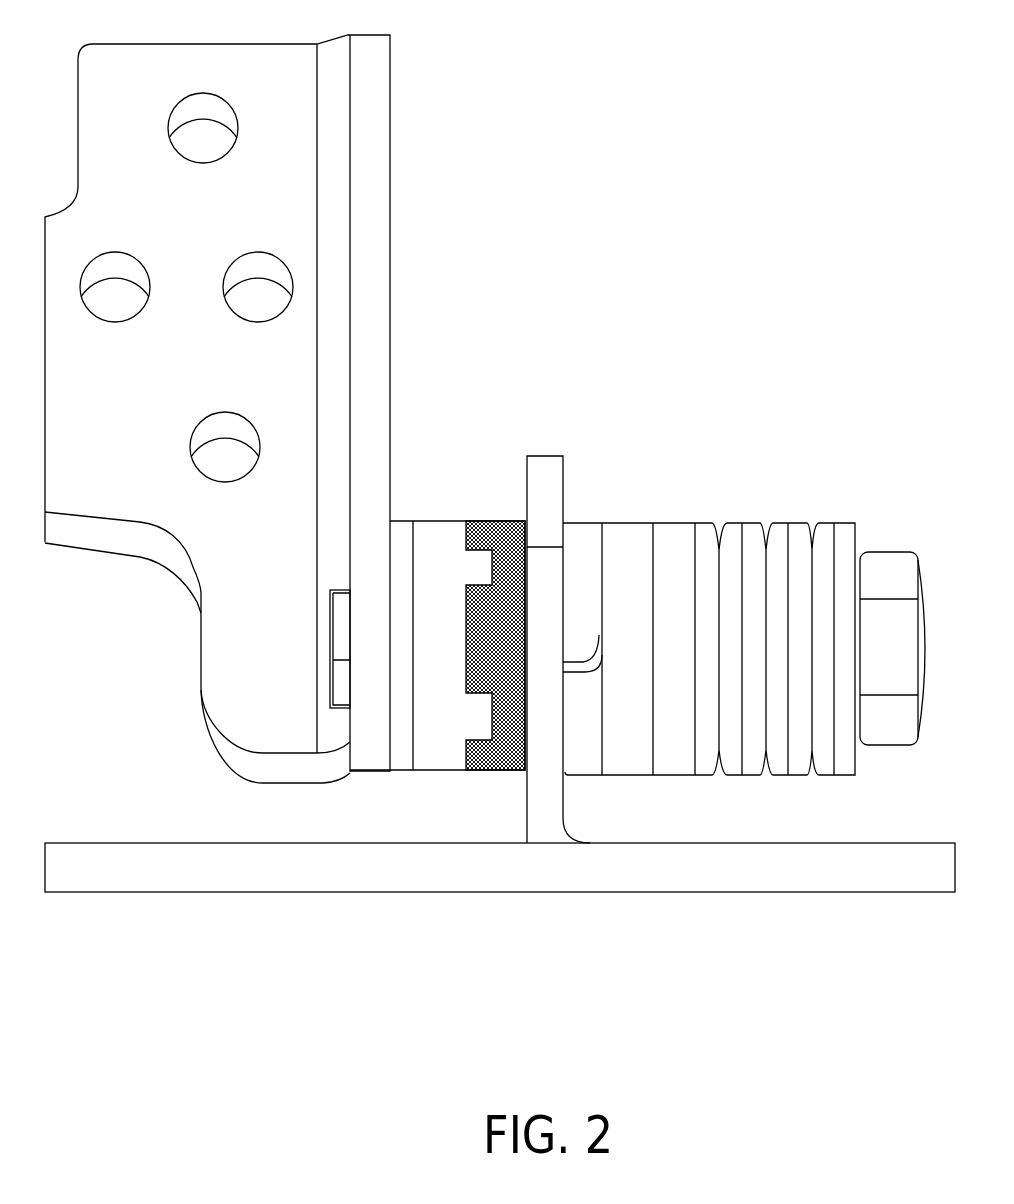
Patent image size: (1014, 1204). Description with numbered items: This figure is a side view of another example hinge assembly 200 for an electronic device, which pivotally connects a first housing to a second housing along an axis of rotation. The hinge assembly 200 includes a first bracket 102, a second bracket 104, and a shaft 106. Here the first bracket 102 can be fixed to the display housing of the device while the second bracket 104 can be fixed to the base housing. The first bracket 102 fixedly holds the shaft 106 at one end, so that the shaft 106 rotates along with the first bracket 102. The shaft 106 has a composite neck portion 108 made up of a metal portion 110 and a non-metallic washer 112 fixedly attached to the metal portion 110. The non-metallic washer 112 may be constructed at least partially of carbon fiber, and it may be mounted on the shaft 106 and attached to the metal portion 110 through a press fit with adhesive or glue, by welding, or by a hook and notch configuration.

The first bracket 102 is at (390, 225).
The second bracket 104 is at (453, 843).
The shaft 106 is at (332, 628).
The composite neck portion 108 is at (437, 642).
The metal portion 110 is at (438, 532).
The non-metallic washer 112 is at (485, 532).
The hinge assembly 200 is at (759, 1032).